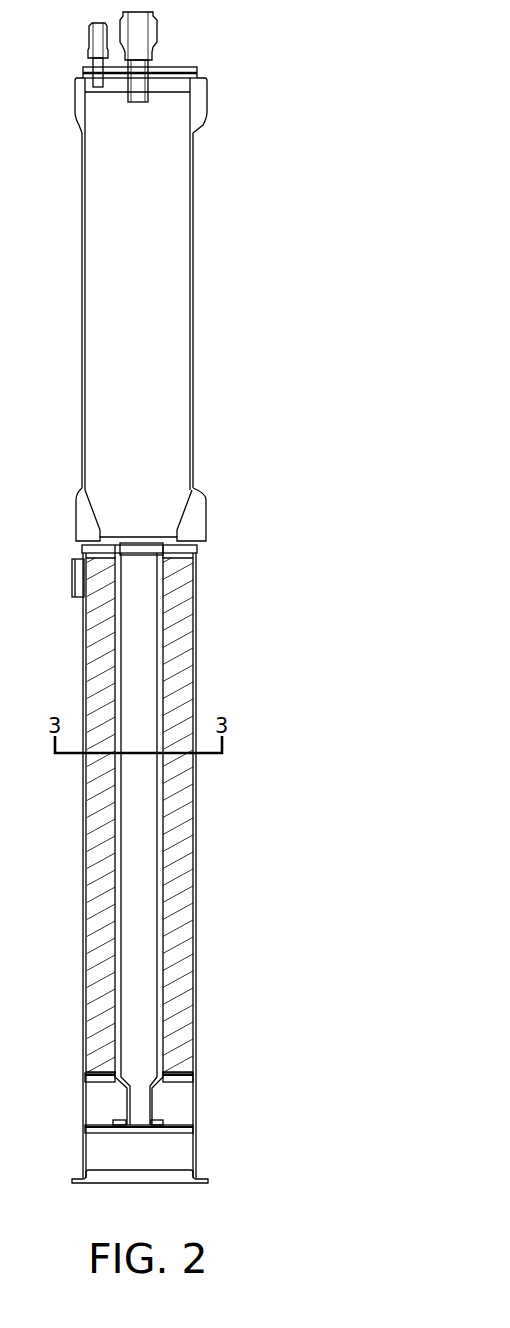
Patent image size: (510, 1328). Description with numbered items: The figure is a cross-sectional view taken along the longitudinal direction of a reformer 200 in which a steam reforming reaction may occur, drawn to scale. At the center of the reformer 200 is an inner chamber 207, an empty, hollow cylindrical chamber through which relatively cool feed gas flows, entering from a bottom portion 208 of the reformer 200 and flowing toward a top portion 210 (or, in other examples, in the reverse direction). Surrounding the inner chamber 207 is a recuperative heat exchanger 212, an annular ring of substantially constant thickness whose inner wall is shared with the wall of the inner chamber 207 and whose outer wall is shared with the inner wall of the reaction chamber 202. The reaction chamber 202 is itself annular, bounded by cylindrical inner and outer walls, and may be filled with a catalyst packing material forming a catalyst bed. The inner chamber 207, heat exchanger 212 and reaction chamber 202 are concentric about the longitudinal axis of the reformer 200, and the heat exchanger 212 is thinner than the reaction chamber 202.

The reformer 200 is at (232, 47).
The top portion 210 is at (226, 579).
The reaction chamber 202 is at (184, 672).
The recuperative heat exchanger 212 is at (158, 843).
The inner chamber 207 is at (140, 943).
The bottom portion 208 is at (221, 1122).